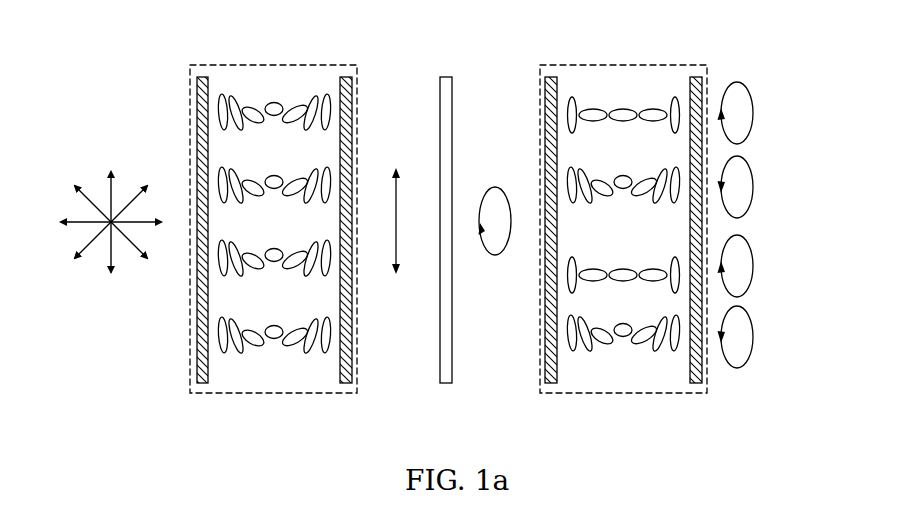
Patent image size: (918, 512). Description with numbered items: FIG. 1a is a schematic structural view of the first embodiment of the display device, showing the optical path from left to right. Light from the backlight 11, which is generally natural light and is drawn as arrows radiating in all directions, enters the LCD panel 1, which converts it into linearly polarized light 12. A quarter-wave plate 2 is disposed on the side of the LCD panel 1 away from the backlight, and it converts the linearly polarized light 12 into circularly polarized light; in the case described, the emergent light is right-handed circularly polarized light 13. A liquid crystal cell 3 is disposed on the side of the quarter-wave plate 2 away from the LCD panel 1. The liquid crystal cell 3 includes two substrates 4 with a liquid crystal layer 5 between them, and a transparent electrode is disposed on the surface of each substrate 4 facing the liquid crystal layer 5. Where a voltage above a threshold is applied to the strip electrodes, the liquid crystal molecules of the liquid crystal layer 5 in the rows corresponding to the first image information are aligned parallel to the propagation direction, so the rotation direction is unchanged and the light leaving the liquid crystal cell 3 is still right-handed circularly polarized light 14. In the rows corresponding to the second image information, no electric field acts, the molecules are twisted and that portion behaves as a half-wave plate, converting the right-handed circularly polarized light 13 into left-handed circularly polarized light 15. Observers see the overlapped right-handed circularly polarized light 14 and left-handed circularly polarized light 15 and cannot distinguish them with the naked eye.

The LCD panel 1 is at (265, 65).
The quarter-wave plate 2 is at (455, 75).
The liquid crystal cell 3 is at (627, 65).
The substrate 4 is at (555, 72).
The liquid crystal layer 5 is at (585, 350).
The light from backlight 11 is at (105, 265).
The linearly polarized light 12 is at (394, 276).
The right-handed circularly polarized light 13 is at (495, 256).
The right-handed circularly polarized light 14 is at (753, 114).
The left-handed circularly polarized light 15 is at (753, 188).